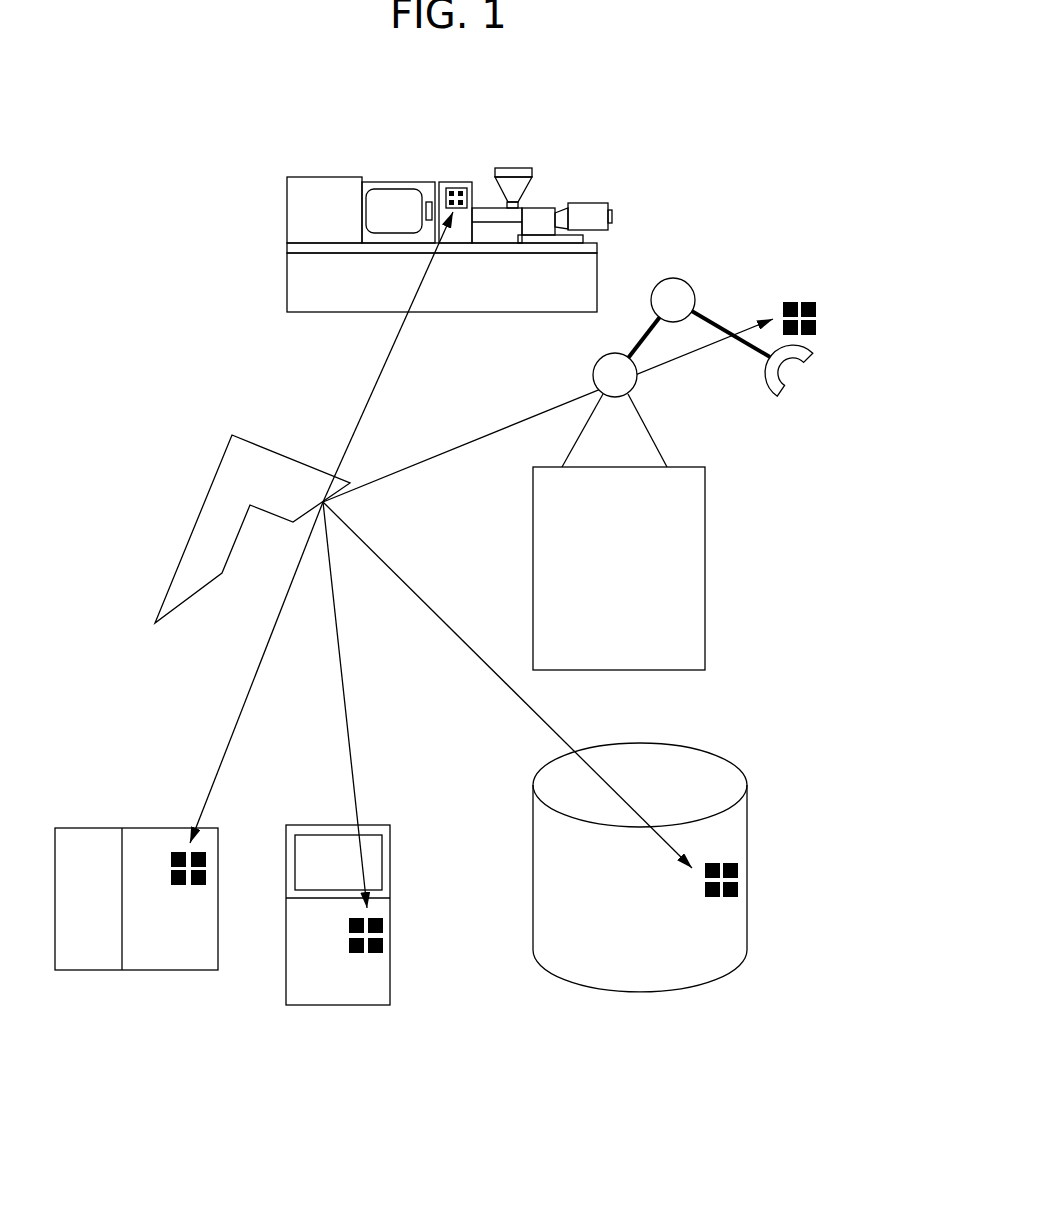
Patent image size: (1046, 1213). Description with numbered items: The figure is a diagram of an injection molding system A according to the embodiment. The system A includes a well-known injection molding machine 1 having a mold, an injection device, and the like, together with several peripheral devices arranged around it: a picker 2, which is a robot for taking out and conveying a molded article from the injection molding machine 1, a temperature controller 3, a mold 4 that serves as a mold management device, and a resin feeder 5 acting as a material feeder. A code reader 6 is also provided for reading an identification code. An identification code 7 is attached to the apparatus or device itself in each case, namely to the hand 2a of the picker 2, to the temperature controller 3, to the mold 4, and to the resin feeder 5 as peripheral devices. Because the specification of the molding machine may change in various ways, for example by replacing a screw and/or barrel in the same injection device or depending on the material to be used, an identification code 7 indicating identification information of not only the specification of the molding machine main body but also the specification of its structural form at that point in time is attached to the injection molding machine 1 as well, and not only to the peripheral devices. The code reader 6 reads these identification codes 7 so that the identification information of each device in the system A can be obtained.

The injection molding system A is at (698, 119).
The injection molding machine 1 is at (445, 174).
The picker 2 is at (701, 474).
The hand 2a is at (810, 361).
The temperature controller 3 is at (332, 1008).
The mold 4 is at (150, 974).
The resin feeder 5 is at (632, 994).
The code reader 6 is at (196, 520).
The identification code 7 is at (458, 189).